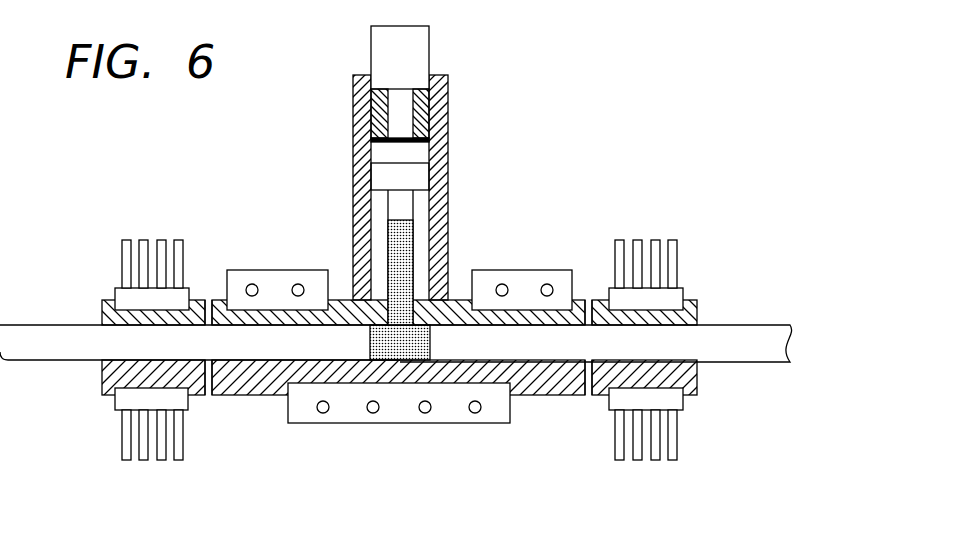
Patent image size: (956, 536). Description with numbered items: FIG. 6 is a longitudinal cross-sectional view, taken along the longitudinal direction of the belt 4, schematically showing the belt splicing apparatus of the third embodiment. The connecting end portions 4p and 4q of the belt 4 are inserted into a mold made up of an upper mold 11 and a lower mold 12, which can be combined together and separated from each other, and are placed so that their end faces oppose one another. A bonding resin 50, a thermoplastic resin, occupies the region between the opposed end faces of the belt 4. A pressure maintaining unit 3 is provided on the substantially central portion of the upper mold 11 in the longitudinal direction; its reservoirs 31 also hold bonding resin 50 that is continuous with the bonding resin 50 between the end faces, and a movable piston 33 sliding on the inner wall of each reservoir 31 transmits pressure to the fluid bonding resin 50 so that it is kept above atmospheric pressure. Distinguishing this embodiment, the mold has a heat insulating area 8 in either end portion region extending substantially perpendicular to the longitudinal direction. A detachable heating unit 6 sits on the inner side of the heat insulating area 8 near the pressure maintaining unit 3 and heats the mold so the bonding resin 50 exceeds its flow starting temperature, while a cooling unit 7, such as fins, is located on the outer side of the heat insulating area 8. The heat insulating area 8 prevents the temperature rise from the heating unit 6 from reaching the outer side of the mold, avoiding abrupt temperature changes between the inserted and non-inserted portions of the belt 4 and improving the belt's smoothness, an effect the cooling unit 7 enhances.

The pressure maintaining unit 3 is at (395, 175).
The reservoir 31 is at (413, 237).
The movable piston 33 is at (397, 168).
The bonding resin 50 is at (397, 243).
The belt 4 is at (402, 360).
The connecting end portion 4p is at (262, 348).
The connecting end portion 4q is at (613, 348).
The heating unit 6 is at (240, 270).
The cooling unit 7 is at (122, 258).
The heat insulating area 8 is at (209, 300).
The upper mold 11 is at (586, 300).
The lower mold 12 is at (105, 380).